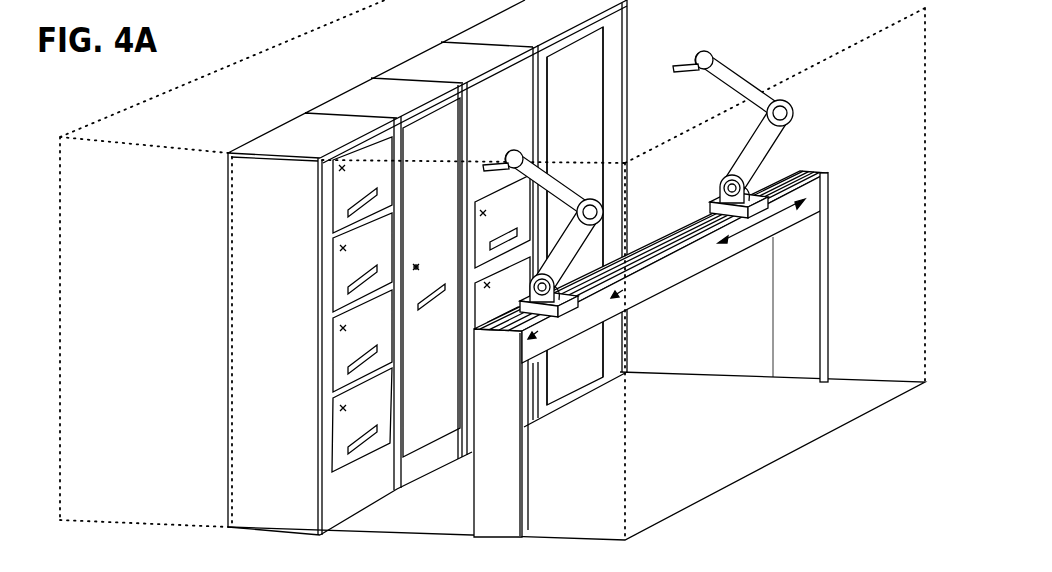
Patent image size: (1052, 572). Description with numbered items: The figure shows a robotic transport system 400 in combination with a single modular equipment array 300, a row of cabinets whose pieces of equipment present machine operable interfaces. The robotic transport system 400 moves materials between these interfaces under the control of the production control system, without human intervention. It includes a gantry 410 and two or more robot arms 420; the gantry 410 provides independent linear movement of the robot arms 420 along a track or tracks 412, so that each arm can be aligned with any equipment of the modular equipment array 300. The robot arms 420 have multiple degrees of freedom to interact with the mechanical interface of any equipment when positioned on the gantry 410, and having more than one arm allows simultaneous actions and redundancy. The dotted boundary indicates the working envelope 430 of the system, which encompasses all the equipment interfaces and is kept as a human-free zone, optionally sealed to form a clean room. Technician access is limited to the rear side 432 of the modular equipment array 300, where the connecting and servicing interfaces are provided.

The modular equipment array 300 is at (238, 331).
The robotic transport system 400 is at (694, 354).
The gantry 410 is at (825, 293).
The track 412 is at (650, 272).
The robot arm 420 is at (795, 110).
The working envelope 430 is at (630, 483).
The rear side 432 is at (168, 93).